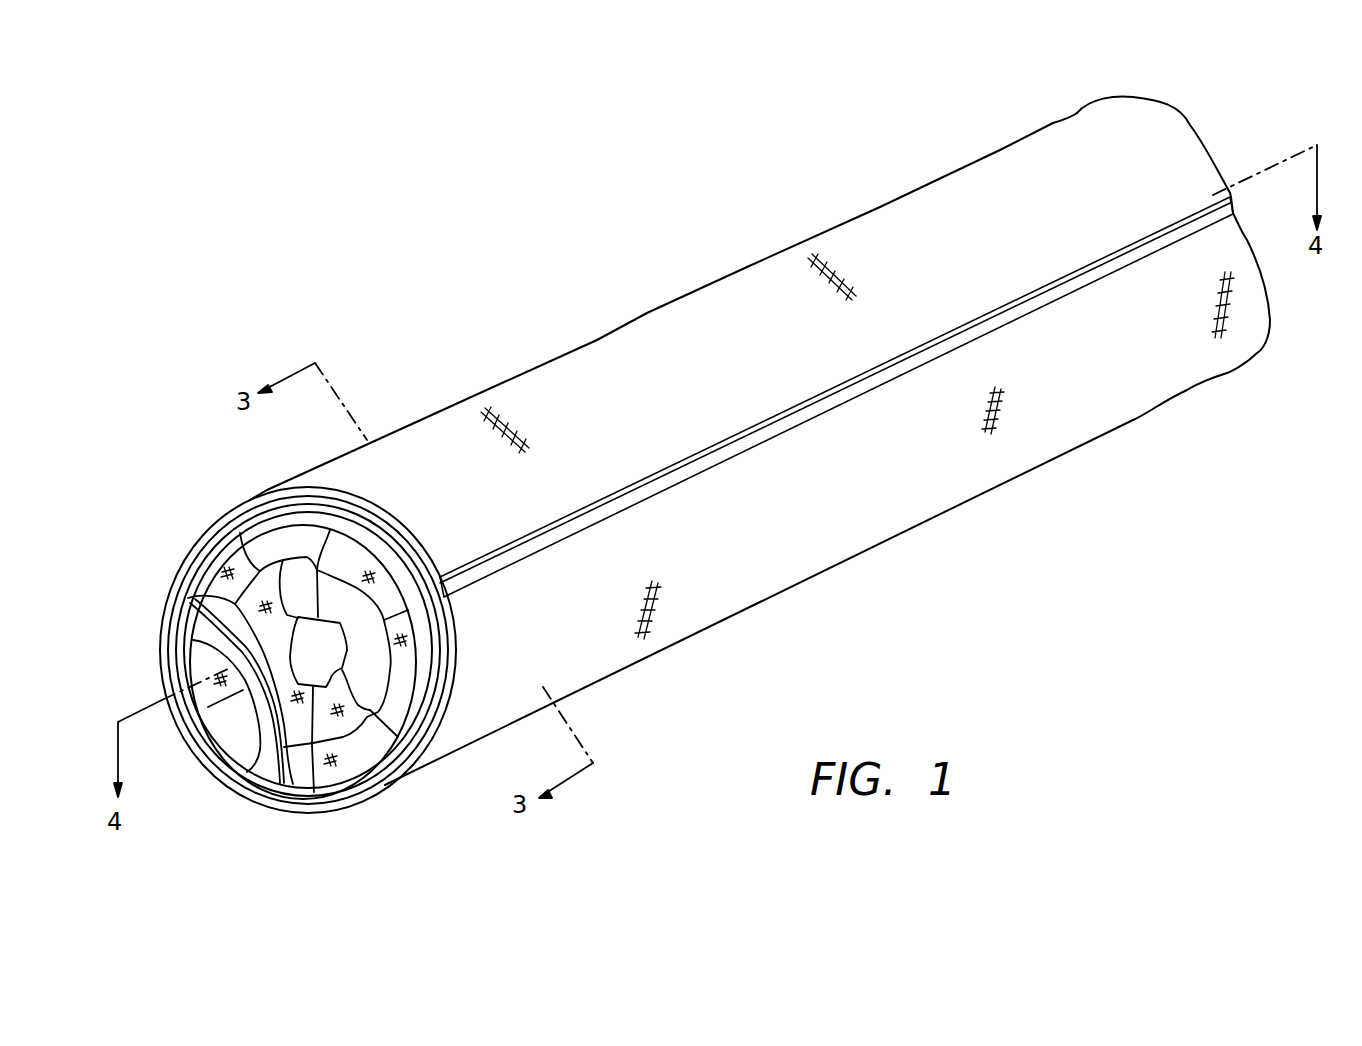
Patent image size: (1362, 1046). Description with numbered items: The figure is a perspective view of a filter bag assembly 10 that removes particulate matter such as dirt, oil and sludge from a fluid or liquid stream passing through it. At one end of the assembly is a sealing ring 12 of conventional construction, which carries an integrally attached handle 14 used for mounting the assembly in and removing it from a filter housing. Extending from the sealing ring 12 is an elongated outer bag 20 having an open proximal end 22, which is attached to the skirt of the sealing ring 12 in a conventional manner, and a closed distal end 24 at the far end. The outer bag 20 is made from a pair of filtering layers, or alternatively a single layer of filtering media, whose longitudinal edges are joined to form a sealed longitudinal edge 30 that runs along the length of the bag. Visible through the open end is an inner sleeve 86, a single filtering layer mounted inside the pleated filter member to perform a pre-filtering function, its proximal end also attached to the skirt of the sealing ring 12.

The filter bag assembly 10 is at (687, 200).
The sealing ring 12 is at (268, 797).
The handle 14 is at (202, 632).
The outer bag 20 is at (595, 363).
The open proximal end 22 is at (442, 747).
The closed distal end 24 is at (1249, 243).
The sealed longitudinal edge 30 is at (833, 403).
The inner sleeve 86 is at (380, 755).